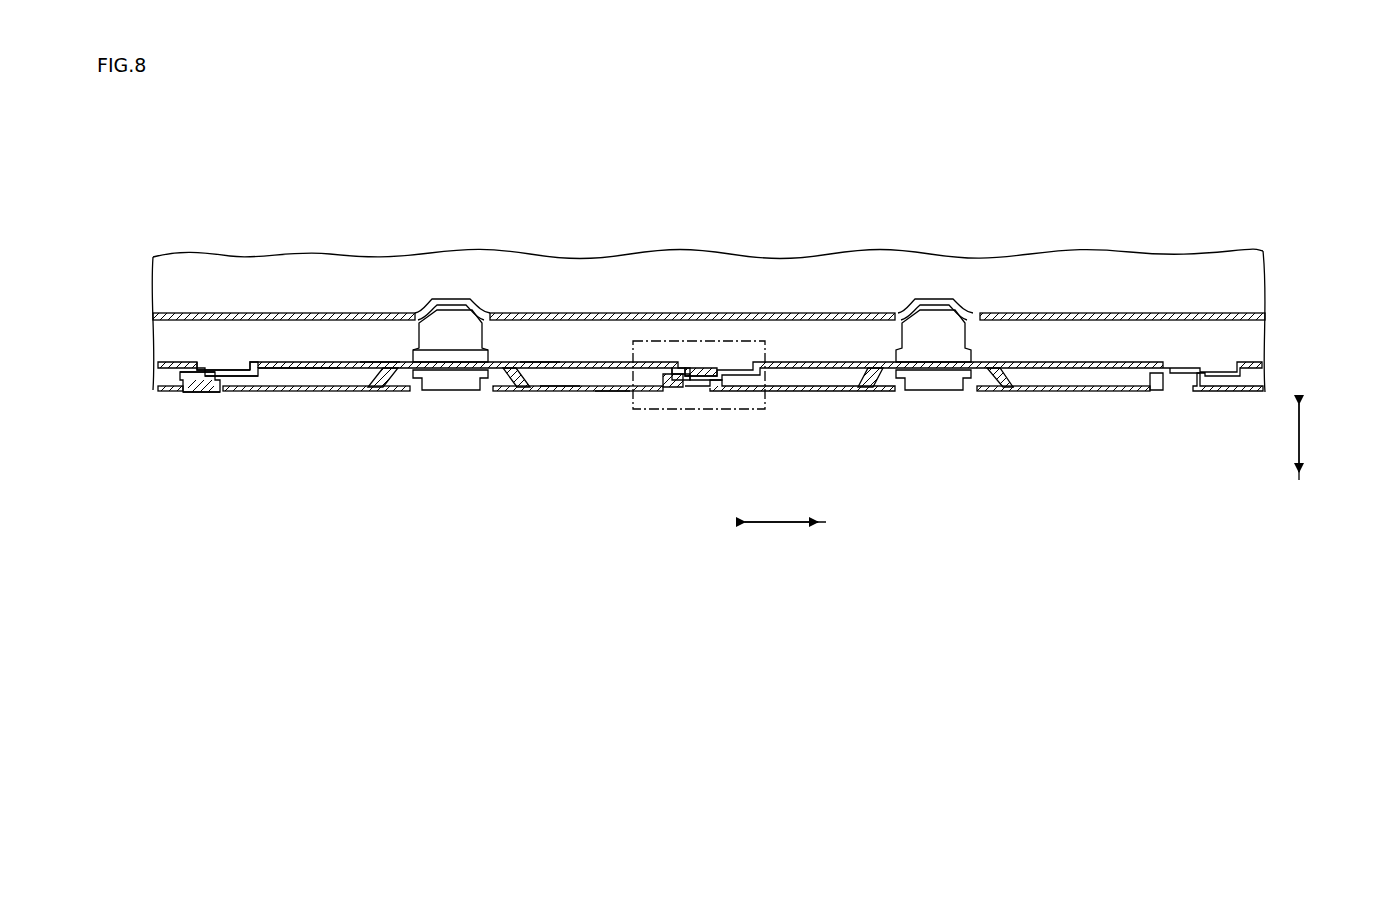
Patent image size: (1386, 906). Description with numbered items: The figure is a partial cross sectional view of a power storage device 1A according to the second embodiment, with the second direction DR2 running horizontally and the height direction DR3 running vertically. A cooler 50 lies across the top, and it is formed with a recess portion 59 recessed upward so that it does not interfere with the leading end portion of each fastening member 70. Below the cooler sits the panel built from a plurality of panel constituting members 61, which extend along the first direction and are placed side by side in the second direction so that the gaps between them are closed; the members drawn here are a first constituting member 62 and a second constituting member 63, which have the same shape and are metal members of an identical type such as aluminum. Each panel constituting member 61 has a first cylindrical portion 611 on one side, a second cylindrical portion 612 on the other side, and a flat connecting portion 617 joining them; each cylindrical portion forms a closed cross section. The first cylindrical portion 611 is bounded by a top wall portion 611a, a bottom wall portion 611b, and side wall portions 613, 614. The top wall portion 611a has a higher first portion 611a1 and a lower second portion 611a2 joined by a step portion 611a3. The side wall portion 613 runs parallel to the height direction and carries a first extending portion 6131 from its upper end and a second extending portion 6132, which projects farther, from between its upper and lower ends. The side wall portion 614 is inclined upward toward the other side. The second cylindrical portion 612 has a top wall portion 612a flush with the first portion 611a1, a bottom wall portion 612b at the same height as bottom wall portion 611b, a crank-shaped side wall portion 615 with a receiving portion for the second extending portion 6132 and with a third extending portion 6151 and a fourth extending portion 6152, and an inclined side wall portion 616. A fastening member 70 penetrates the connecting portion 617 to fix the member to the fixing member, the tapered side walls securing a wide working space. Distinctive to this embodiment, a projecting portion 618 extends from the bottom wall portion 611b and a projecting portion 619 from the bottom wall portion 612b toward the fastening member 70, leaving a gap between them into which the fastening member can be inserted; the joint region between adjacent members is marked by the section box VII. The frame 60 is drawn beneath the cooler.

The power storage device 1A is at (1274, 243).
The cooler 50 is at (863, 311).
The recess portion 59 is at (454, 297).
The frame 60 is at (1248, 361).
The panel constituting member 61 is at (710, 315).
The first constituting member 62 is at (315, 479).
The second constituting member 63 is at (1113, 479).
The first cylindrical portion 611 is at (353, 393).
The top wall portion 611a is at (287, 255).
The first portion 611a1 is at (338, 365).
The second portion 611a2 is at (244, 364).
The step portion 611a3 is at (258, 368).
The bottom wall portion 611b is at (281, 393).
The second cylindrical portion 612 is at (710, 326).
The top wall portion 612a is at (562, 385).
The bottom wall portion 612b is at (613, 393).
The side wall portion 613 is at (222, 342).
The first extending portion 6131 is at (222, 364).
The second extending portion 6132 is at (204, 394).
The side wall portion 614 is at (379, 364).
The side wall portion 615 is at (671, 335).
The third extending portion 6151 is at (694, 366).
The fourth extending portion 6152 is at (674, 394).
The side wall portion 616 is at (533, 364).
The connecting portion 617 is at (462, 349).
The projecting portion 618 is at (398, 392).
The projecting portion 619 is at (510, 393).
The fastening member 70 is at (450, 394).
The section VII is at (740, 412).
The second direction DR2 is at (783, 524).
The third direction DR3 is at (1302, 440).